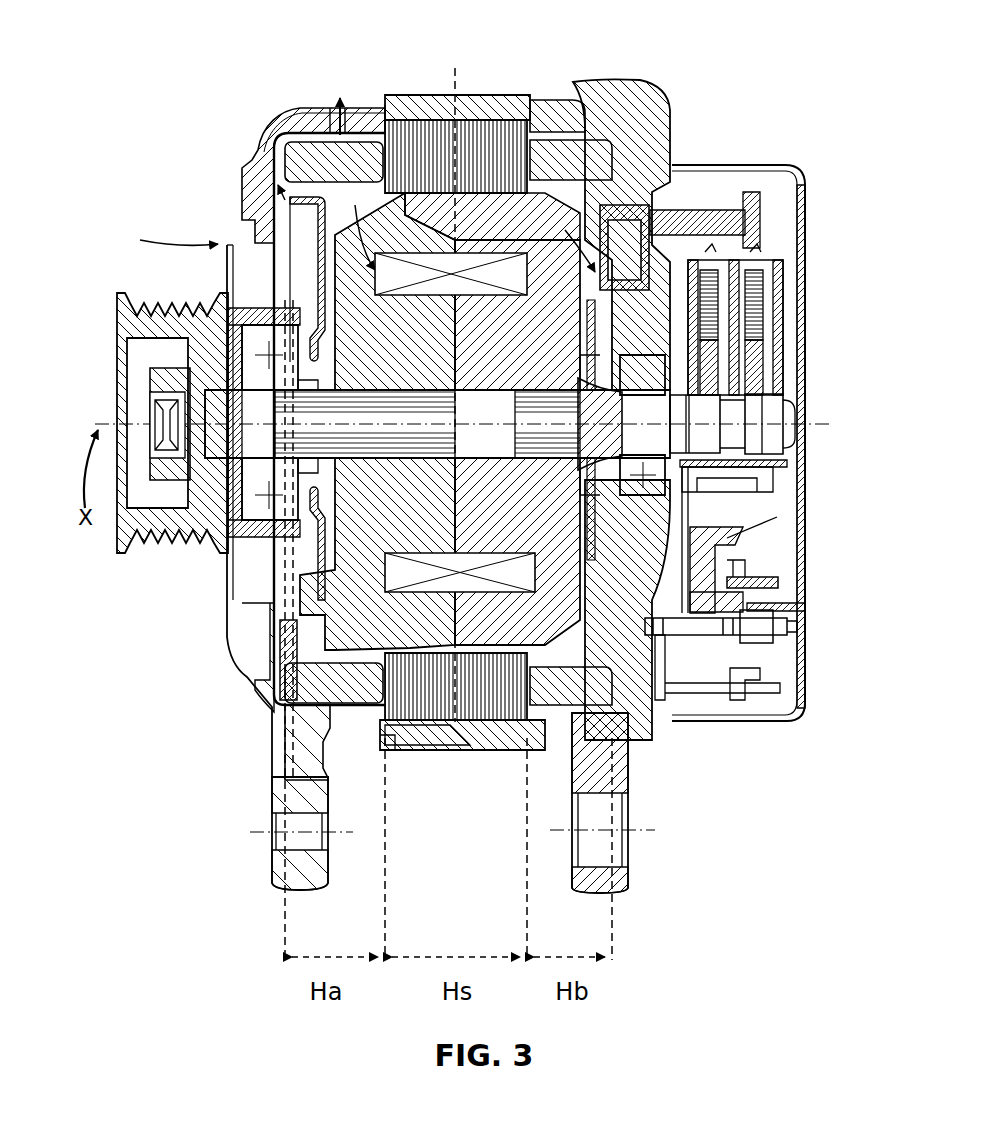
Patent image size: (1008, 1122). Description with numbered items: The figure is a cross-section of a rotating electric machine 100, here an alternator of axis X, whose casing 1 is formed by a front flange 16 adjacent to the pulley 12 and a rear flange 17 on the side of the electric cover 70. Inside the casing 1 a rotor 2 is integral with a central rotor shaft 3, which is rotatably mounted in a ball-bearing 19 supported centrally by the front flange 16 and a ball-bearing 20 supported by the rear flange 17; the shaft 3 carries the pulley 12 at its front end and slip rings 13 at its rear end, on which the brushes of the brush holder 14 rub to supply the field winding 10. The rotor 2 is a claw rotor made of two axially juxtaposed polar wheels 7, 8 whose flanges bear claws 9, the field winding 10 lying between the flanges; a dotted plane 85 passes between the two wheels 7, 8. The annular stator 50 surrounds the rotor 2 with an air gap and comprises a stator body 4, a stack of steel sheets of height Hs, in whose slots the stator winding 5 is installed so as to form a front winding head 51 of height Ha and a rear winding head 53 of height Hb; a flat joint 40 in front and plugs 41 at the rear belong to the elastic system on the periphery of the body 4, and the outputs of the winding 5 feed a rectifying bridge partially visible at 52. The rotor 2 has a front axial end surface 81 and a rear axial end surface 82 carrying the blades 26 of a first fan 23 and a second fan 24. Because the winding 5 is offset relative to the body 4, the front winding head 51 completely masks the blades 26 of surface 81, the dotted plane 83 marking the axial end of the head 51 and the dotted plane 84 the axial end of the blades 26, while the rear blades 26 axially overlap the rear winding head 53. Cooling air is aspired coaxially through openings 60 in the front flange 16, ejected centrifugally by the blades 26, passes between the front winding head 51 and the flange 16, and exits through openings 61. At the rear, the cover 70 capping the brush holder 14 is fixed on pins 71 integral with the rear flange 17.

The casing 1 is at (222, 128).
The rotor 2 is at (274, 155).
The rotor shaft 3 is at (437, 424).
The stator body 4 is at (470, 108).
The stator winding 5 is at (330, 110).
The polar wheel 7 is at (377, 421).
The polar wheel 8 is at (517, 442).
The claws 9 is at (492, 216).
The field winding 10 is at (455, 422).
The pulley 12 is at (120, 385).
The slip rings 13 is at (732, 424).
The brush holder 14 is at (790, 300).
The front flange 16 is at (255, 187).
The rear flange 17 is at (670, 270).
The ball-bearing 19 is at (273, 422).
The ball-bearing 20 is at (642, 425).
The first fan 23 is at (258, 145).
The second fan 24 is at (623, 245).
The blades 26 is at (305, 235).
The flat joint 40 is at (372, 105).
The plugs 41 is at (535, 98).
The stator 50 is at (445, 722).
The front winding head 51 is at (382, 742).
The rectifying bridge 52 is at (762, 582).
The rear winding head 53 is at (582, 140).
The openings 60 is at (278, 600).
The openings 61 is at (332, 745).
The cover 70 is at (725, 722).
The pins 71 is at (805, 635).
The axial end surface 81 is at (320, 586).
The axial end surface 82 is at (592, 552).
The plane 83 is at (282, 848).
The plane 84 is at (294, 784).
The plane 85 is at (452, 68).
The rotating electric machine 100 is at (195, 760).